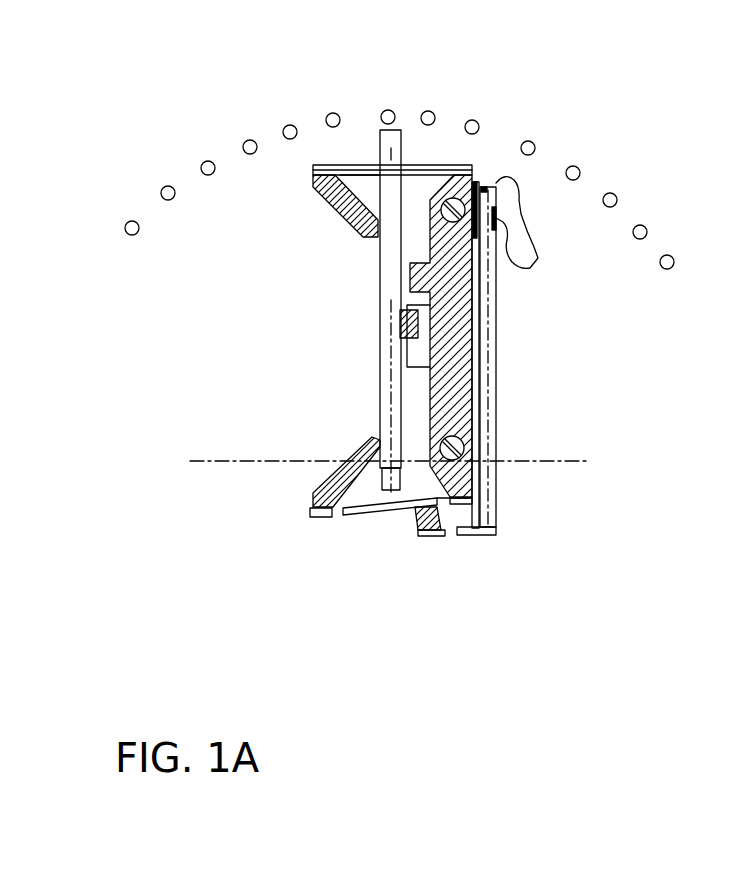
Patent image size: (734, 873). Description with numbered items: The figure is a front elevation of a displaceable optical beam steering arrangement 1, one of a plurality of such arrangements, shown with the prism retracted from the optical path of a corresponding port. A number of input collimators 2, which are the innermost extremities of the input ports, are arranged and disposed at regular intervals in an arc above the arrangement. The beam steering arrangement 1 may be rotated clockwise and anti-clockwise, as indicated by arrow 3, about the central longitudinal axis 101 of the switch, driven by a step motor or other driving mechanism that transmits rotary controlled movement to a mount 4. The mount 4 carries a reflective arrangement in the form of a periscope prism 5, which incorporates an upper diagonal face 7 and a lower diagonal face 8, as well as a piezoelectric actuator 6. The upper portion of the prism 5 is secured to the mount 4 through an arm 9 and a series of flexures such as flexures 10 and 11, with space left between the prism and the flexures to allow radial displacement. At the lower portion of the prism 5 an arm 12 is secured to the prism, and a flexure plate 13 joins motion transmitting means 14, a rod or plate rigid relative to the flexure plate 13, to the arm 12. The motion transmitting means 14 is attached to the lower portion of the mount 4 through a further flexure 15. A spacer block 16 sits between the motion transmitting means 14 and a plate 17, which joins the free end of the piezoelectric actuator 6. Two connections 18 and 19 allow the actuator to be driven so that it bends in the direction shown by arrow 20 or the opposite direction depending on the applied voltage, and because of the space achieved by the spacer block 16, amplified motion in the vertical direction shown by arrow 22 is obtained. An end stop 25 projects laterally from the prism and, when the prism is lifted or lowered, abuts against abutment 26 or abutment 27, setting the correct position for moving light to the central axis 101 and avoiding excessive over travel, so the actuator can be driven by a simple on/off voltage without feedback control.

The beam steering arrangement 1 is at (313, 273).
The input collimators 2 is at (125, 222).
The arrow 3 is at (548, 334).
The mount 4 is at (486, 445).
The periscope prism 5 is at (373, 155).
The piezoelectric actuator 6 is at (501, 287).
The upper diagonal face 7 is at (383, 137).
The lower diagonal face 8 is at (380, 490).
The arm 9 is at (337, 213).
The flexure 10 is at (333, 162).
The flexure 11 is at (450, 160).
The arm 12 is at (313, 490).
The flexure plate 13 is at (333, 526).
The motion transmitting means 14 is at (402, 512).
The flexure 15 is at (451, 510).
The spacer block 16 is at (423, 530).
The plate 17 is at (486, 541).
The connection 18 is at (524, 182).
The connection 19 is at (533, 265).
The arrow 20 is at (500, 520).
The arrow 22 is at (365, 383).
The end stop 25 is at (399, 320).
The abutment 26 is at (418, 280).
The abutment 27 is at (410, 353).
The central longitudinal axis 101 is at (245, 456).